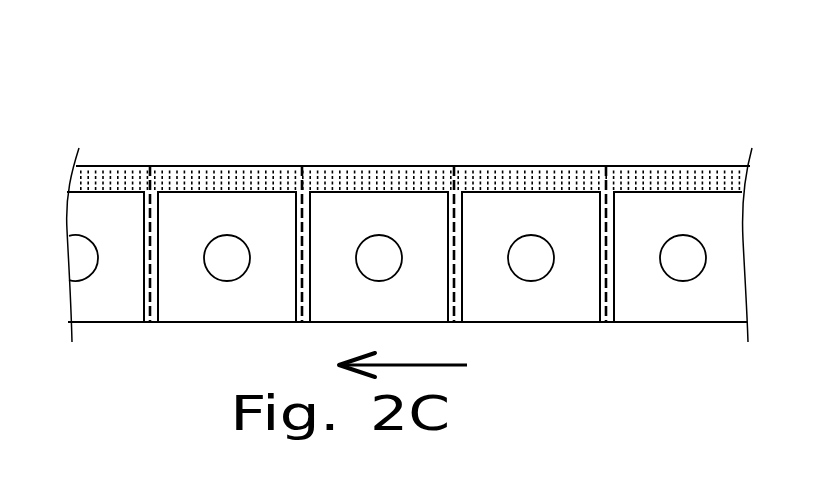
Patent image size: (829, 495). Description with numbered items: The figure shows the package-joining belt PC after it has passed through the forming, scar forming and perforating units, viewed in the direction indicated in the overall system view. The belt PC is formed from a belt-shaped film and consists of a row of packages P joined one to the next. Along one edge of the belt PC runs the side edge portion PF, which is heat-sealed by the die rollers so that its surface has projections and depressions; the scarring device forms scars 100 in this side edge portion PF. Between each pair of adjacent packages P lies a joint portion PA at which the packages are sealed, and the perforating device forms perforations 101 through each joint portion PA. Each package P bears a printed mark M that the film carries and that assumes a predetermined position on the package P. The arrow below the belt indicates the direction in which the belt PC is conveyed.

The scars 100 is at (110, 178).
The perforations 101 is at (152, 212).
The package P is at (336, 213).
The side edge portion PF is at (383, 180).
The package-joining belt PC is at (428, 156).
The joint portion PA is at (456, 211).
The printed mark M is at (683, 248).